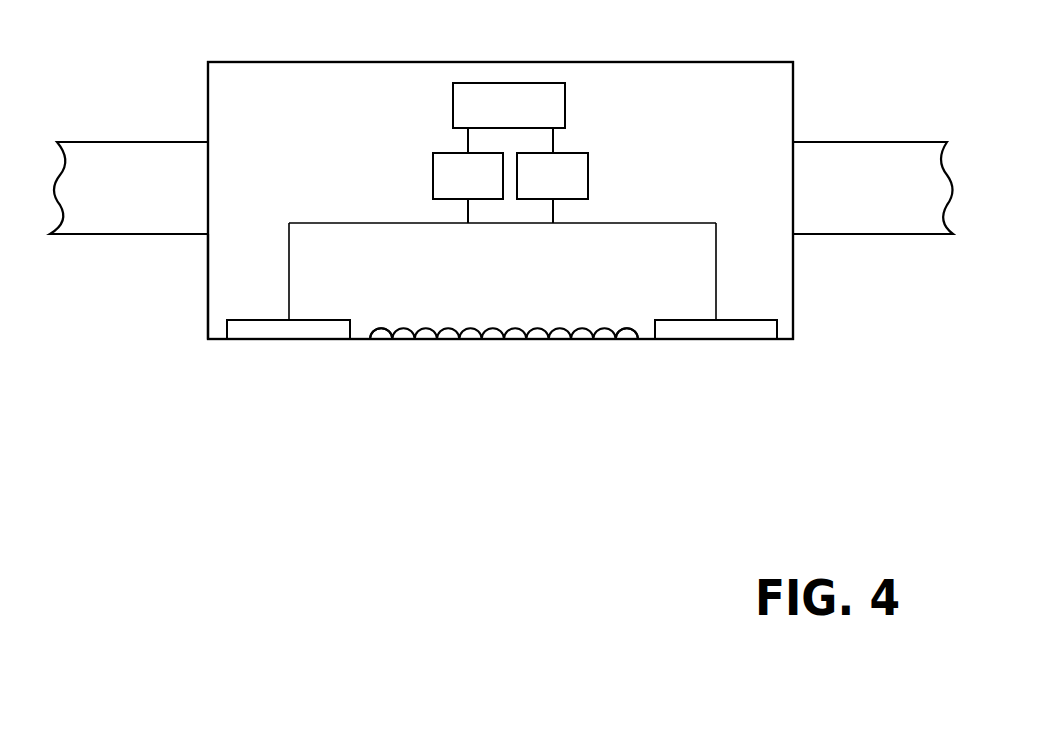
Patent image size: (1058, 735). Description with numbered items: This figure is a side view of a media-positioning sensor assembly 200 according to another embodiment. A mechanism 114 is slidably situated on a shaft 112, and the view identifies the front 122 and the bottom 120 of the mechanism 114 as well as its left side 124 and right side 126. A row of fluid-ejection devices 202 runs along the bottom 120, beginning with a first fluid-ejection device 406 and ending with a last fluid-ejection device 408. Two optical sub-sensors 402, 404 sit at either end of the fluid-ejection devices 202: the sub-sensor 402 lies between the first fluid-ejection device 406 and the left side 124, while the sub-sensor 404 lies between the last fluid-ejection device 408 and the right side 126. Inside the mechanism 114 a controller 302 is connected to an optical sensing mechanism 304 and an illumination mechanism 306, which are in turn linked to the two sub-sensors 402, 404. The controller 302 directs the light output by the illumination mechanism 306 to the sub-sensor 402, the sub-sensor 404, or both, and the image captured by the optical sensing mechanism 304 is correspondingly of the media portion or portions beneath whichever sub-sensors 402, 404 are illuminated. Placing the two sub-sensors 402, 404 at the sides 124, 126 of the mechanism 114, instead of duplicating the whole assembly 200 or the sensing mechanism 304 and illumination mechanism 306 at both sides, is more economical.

The shaft 112 is at (100, 150).
The mechanism 114 is at (770, 70).
The bottom 120 is at (783, 340).
The front 122 is at (264, 107).
The left side 124 is at (207, 300).
The right side 126 is at (795, 288).
The media-positioning sensor assembly 200 is at (127, 401).
The fluid-ejection devices 202 is at (630, 313).
The controller 302 is at (529, 115).
The optical sensing mechanism 304 is at (488, 186).
The illumination mechanism 306 is at (572, 186).
The optical sub-sensor 402 is at (263, 335).
The optical sub-sensor 404 is at (727, 333).
The first fluid-ejection device 406 is at (373, 339).
The last fluid-ejection device 408 is at (628, 339).